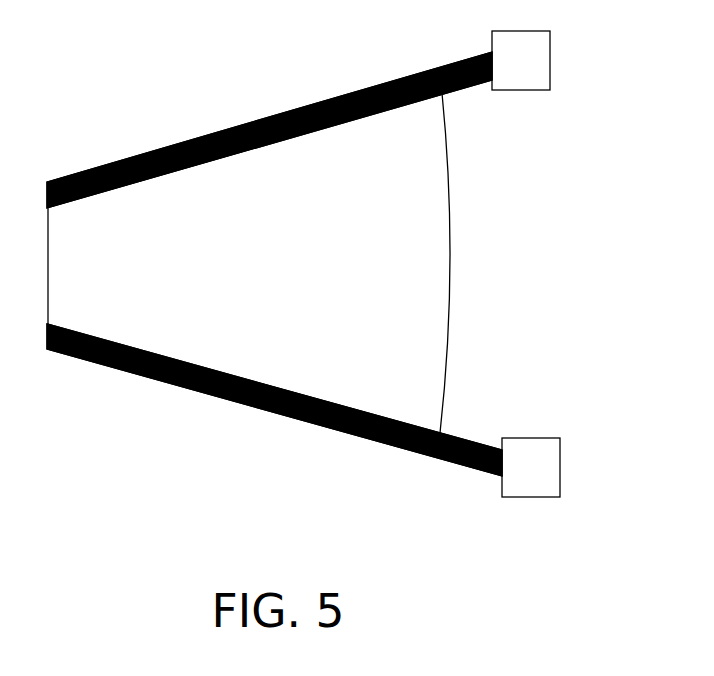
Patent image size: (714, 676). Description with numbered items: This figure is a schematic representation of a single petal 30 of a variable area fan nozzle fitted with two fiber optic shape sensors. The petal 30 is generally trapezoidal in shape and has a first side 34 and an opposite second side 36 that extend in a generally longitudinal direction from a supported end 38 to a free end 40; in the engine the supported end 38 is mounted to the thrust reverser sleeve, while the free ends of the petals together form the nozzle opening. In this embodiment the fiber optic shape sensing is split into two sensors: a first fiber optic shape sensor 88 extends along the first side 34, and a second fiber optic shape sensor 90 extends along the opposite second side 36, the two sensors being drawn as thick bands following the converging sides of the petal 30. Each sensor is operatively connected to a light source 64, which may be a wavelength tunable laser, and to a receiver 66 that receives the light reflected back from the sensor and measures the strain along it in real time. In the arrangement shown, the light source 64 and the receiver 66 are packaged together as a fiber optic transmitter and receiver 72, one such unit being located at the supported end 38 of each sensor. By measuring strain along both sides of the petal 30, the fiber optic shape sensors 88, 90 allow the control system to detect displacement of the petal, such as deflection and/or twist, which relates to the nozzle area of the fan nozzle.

The petal 30 is at (248, 288).
The first side 34 is at (192, 363).
The second side 36 is at (222, 158).
The supported end 38 is at (449, 265).
The free end 40 is at (49, 267).
The light source 64 is at (550, 43).
The receiver 66 is at (550, 73).
The fiber optic transmitter and receiver 72 is at (507, 77).
The first fiber optic shape sensor 88 is at (232, 402).
The second fiber optic shape sensor 90 is at (268, 118).